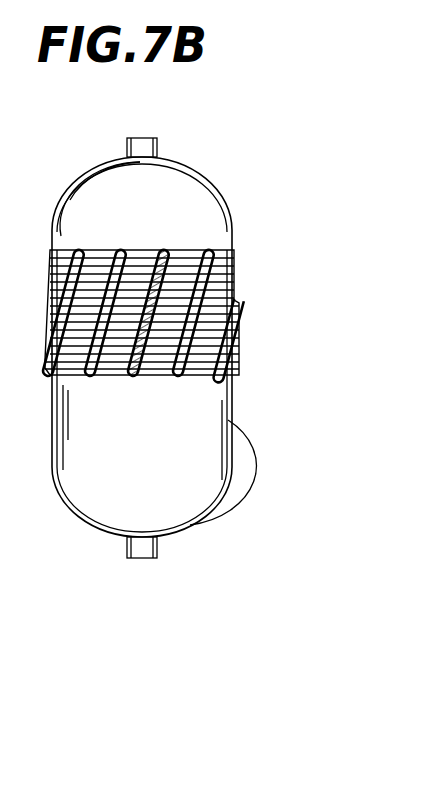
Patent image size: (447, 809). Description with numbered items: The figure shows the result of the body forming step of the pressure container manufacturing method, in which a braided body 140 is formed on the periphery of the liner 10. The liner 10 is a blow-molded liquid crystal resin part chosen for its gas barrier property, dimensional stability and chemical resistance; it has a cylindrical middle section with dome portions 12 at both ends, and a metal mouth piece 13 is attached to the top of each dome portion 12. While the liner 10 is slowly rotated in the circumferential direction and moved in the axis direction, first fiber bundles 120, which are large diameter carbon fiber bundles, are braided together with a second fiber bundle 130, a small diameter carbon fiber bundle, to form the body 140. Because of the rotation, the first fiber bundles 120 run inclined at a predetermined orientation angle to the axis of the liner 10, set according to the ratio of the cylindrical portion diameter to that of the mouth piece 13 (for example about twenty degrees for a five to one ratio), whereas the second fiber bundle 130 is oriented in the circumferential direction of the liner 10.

The liner 10 is at (233, 437).
The dome portion 12 is at (172, 180).
The mouth piece 13 is at (142, 138).
The first fiber bundle 120 is at (83, 250).
The second fiber bundle 130 is at (153, 374).
The body 140 is at (249, 318).